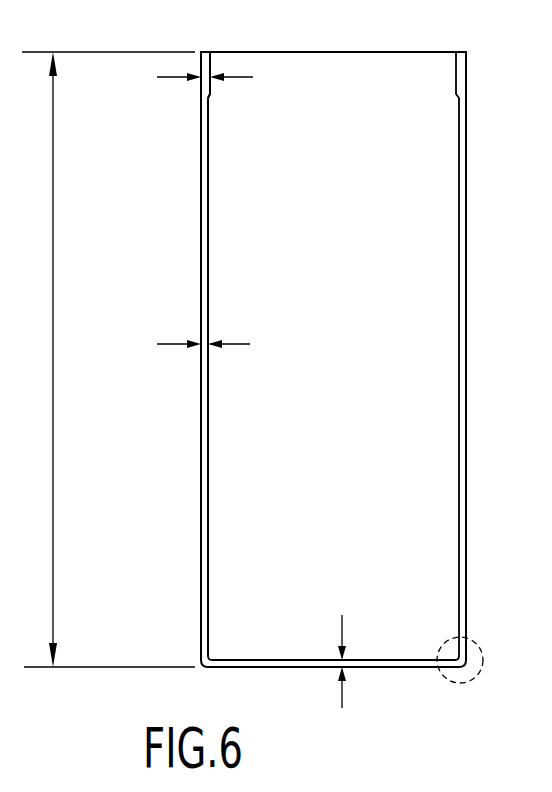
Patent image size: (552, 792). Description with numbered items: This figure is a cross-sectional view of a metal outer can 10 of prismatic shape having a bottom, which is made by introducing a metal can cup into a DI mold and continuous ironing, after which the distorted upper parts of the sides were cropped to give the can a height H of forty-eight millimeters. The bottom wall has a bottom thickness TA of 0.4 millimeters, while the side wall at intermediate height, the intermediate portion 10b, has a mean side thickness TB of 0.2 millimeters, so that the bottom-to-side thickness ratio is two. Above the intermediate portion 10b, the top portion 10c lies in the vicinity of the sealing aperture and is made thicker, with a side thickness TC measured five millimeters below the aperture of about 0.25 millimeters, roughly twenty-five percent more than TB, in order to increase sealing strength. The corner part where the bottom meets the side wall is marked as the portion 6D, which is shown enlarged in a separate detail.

The metal outer can 10 is at (466, 457).
The intermediate portion 10b is at (201, 503).
The top portion 10c is at (200, 90).
The side thickness in the vicinity of the sealing aperture TC is at (209, 77).
The side thickness TB is at (208, 344).
The bottom thickness TA is at (342, 660).
The height H is at (108, 359).
The portion designated 6D is at (468, 681).